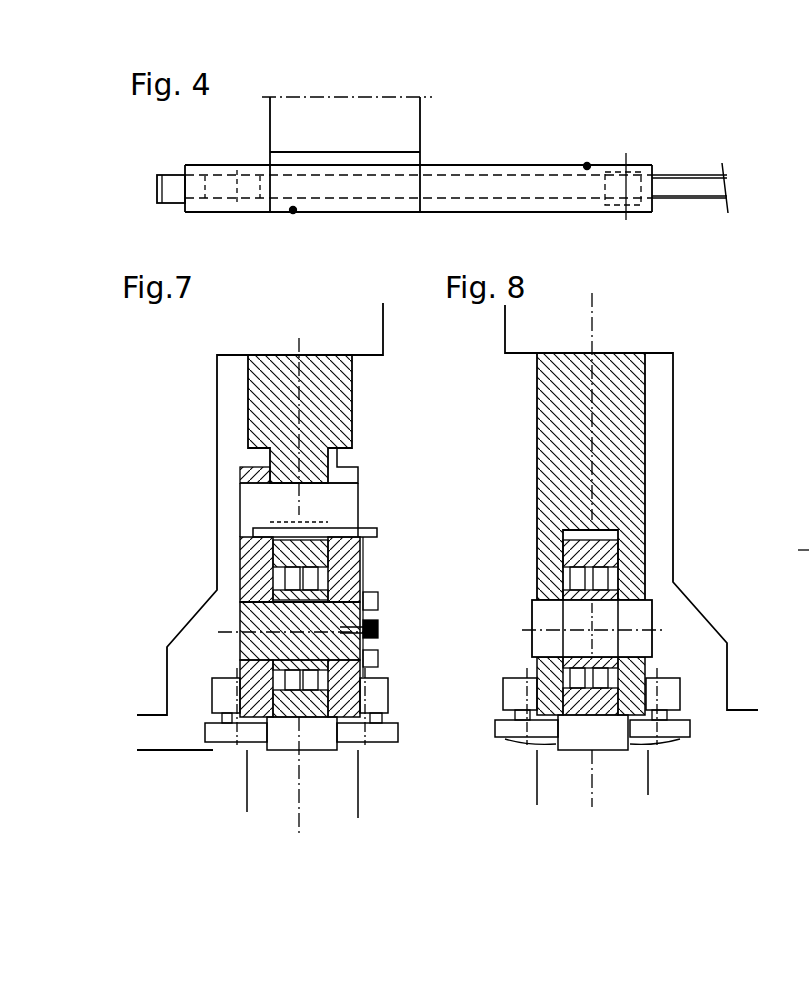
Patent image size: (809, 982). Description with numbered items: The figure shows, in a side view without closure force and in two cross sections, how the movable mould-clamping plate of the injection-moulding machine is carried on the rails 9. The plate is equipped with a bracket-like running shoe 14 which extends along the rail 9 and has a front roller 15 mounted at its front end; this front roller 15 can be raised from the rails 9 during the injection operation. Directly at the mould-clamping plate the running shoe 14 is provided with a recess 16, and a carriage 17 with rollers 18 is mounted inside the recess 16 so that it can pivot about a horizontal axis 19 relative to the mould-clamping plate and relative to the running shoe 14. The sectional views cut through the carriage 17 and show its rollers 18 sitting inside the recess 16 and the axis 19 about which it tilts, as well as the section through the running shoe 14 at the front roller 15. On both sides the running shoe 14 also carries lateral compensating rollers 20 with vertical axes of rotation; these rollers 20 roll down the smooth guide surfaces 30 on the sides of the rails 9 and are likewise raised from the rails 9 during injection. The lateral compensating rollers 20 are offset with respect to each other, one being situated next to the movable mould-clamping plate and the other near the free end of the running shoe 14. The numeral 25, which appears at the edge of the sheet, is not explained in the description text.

In FIG. 4, the rail 9 is at (715, 190).
In FIG. 4, the running shoe 14 is at (538, 185).
In FIG. 7, the running shoe 14 is at (318, 415).
In FIG. 8, the running shoe 14 is at (610, 455).
In FIG. 4, the front roller 15 is at (636, 185).
In FIG. 8, the front roller 15 is at (608, 720).
In FIG. 7, the recess 16 is at (335, 460).
In FIG. 7, the carriage 17 is at (372, 558).
In FIG. 4, the roller 18 is at (247, 187).
In FIG. 7, the roller 18 is at (283, 720).
In FIG. 7, the axis 19 is at (328, 510).
In FIG. 4, the lateral compensating roller 20 is at (296, 216).
In FIG. 7, the lateral compensating roller 20 is at (217, 728).
In FIG. 8, the lateral compensating roller 20 is at (505, 725).
In FIG. 8, the support 25 is at (798, 702).
In FIG. 8, the guide surface 30 is at (550, 742).